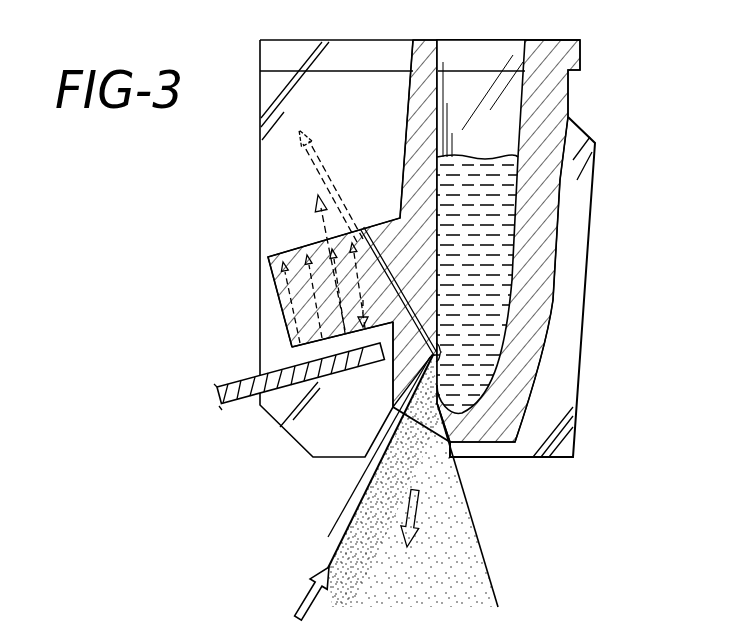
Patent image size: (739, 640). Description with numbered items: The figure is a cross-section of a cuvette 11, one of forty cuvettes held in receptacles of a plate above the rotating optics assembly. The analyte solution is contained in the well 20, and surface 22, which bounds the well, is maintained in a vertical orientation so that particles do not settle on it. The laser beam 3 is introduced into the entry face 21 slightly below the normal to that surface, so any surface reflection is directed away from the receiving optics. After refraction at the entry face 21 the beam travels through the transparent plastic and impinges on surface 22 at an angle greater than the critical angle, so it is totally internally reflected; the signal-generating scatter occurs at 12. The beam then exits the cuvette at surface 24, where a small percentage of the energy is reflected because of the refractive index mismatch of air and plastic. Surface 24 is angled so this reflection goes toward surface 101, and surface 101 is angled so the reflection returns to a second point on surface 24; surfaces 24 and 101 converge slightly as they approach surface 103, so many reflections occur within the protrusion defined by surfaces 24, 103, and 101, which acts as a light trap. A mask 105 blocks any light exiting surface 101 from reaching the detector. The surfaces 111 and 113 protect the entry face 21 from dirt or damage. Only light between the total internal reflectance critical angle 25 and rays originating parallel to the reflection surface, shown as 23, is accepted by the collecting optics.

The laser beam 3 is at (328, 555).
The cuvette 11 is at (258, 348).
The total internal reflection surface 12 is at (453, 355).
The well 20 is at (456, 155).
The entry face 21 is at (422, 432).
The total internal reflection surface 22 is at (438, 272).
The rays originating parallel to surface 12 23 is at (498, 590).
The exit surface 24 is at (300, 247).
The total internal reflectance critical angle 25 is at (343, 508).
The surface 101 is at (295, 350).
The surface 103 is at (272, 290).
The mask 105 is at (217, 396).
The surface 111 is at (327, 460).
The surface 113 is at (528, 457).